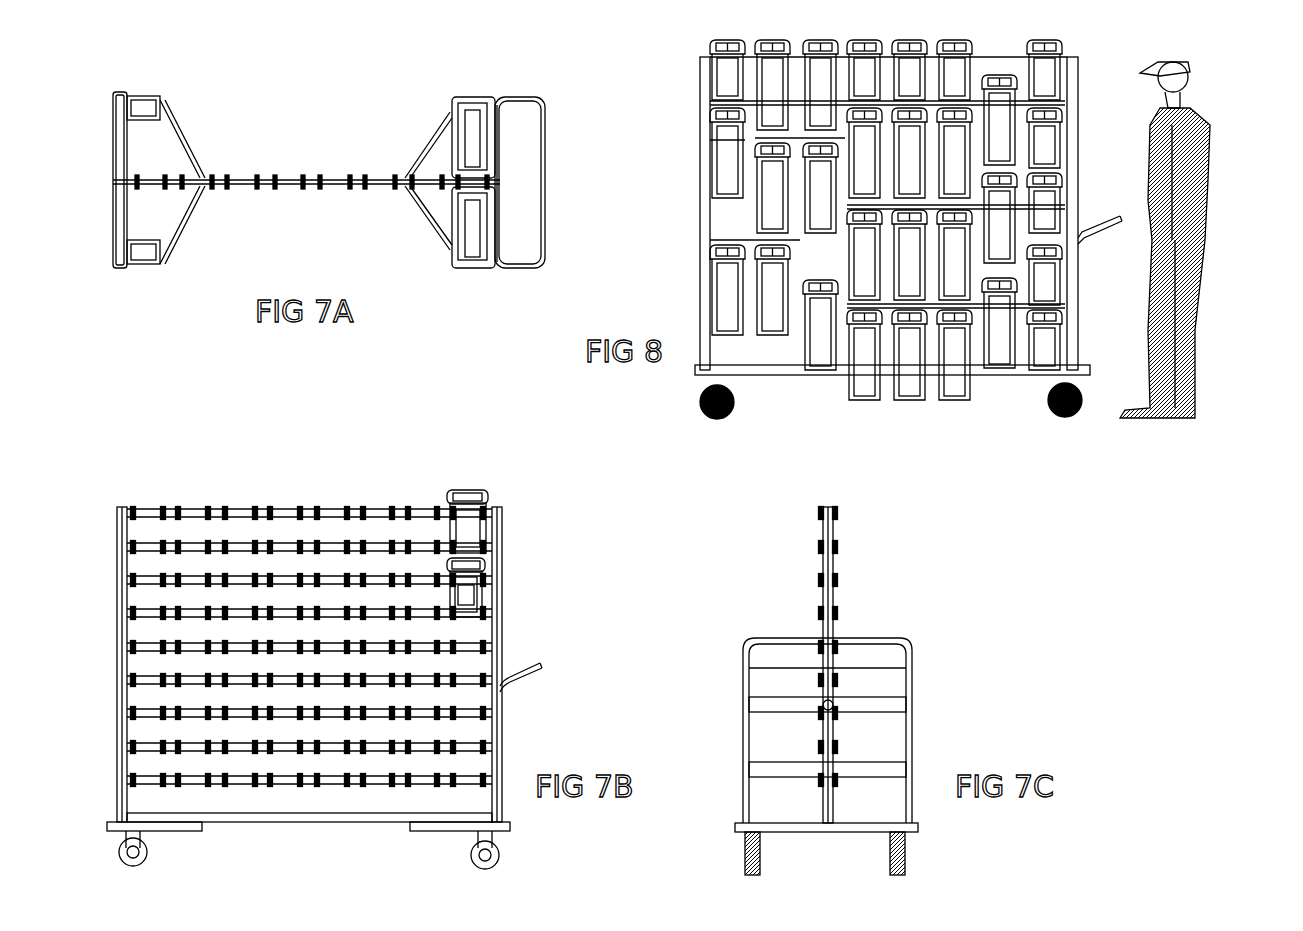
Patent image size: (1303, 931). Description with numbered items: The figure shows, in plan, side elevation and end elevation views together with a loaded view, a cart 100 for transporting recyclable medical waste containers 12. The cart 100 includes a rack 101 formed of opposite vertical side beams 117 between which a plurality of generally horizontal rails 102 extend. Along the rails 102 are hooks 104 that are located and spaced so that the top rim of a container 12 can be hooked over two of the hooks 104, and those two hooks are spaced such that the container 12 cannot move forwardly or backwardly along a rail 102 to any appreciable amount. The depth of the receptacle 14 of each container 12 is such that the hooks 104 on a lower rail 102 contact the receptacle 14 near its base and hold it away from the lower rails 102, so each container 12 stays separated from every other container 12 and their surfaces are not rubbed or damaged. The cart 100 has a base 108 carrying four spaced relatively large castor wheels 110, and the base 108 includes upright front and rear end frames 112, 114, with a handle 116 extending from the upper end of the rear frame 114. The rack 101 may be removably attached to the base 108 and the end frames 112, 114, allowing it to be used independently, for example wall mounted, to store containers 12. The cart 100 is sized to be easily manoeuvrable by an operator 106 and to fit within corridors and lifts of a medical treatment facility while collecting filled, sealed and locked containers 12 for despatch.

In FIG. 7A, the cart 100 is at (247, 108).
In FIG. 7B, the cart 100 is at (147, 478).
In FIG. 7C, the cart 100 is at (920, 610).
In FIG. 8, the cart 100 is at (640, 150).
In FIG. 7B, the rack 101 is at (122, 505).
In FIG. 7C, the rack 101 is at (810, 508).
In FIG. 8, the rack 101 is at (697, 50).
In FIG. 7A, the rails 102 is at (287, 190).
In FIG. 7B, the rails 102 is at (378, 550).
In FIG. 7A, the hooks 104 is at (400, 178).
In FIG. 7B, the hooks 104 is at (278, 578).
In FIG. 7C, the hooks 104 is at (845, 578).
In FIG. 7A, the container 12 is at (450, 115).
In FIG. 7B, the container 12 is at (483, 492).
In FIG. 8, the container 12 is at (868, 372).
In FIG. 7B, the receptacle 14 is at (472, 600).
In FIG. 8, the operator 106 is at (1200, 155).
In FIG. 7B, the base 108 is at (307, 822).
In FIG. 7B, the castor wheels 110 is at (150, 855).
In FIG. 7C, the castor wheels 110 is at (885, 872).
In FIG. 7B, the front end frame 112 is at (115, 745).
In FIG. 8, the front end frame 112 is at (700, 270).
In FIG. 7B, the rear end frame 114 is at (500, 750).
In FIG. 8, the rear end frame 114 is at (1082, 295).
In FIG. 7B, the handle 116 is at (545, 672).
In FIG. 8, the handle 116 is at (1130, 205).
In FIG. 7B, the vertical side beams 117 is at (500, 537).
In FIG. 7C, the vertical side beams 117 is at (823, 553).